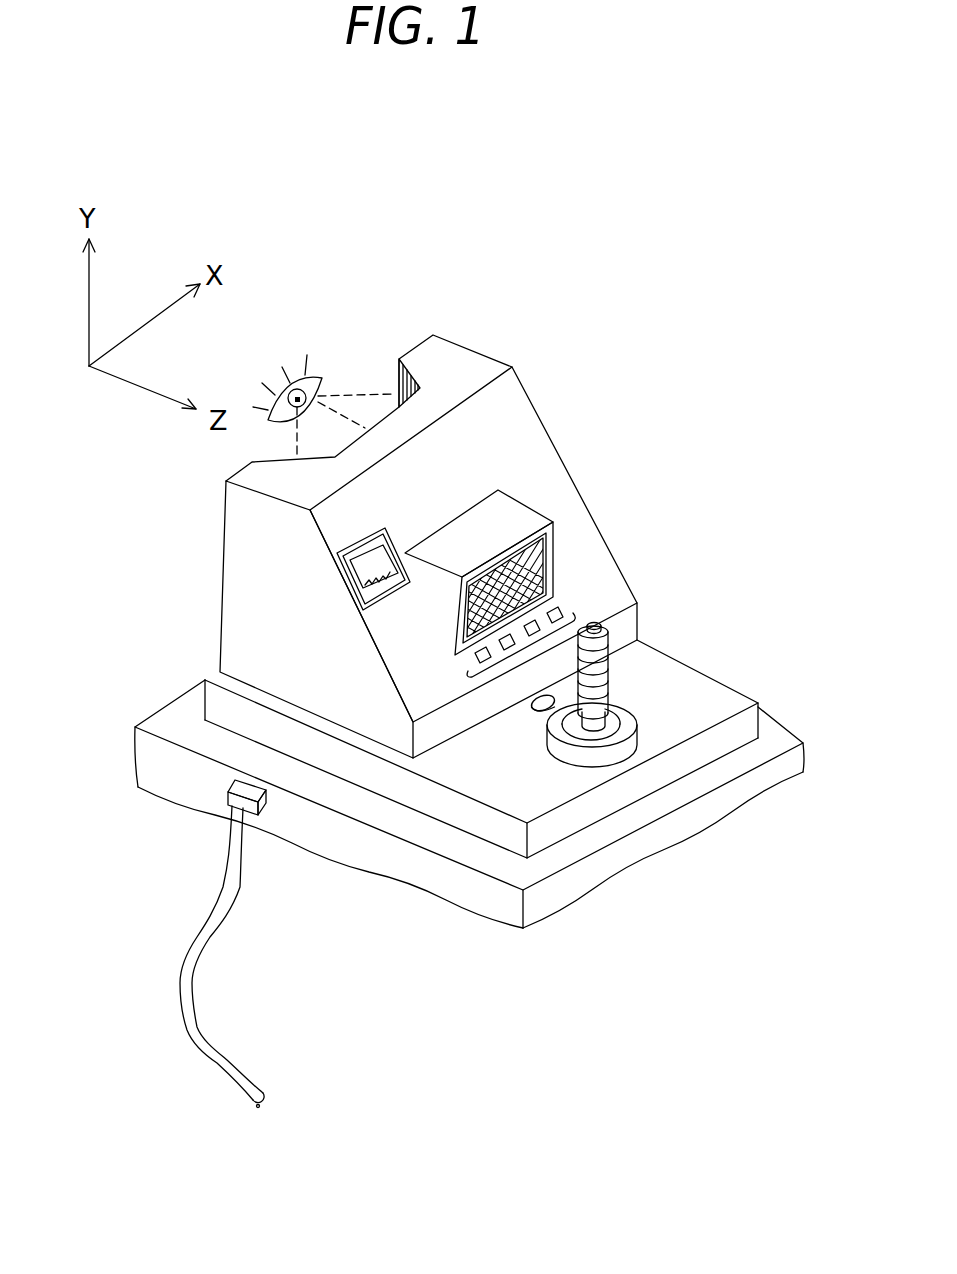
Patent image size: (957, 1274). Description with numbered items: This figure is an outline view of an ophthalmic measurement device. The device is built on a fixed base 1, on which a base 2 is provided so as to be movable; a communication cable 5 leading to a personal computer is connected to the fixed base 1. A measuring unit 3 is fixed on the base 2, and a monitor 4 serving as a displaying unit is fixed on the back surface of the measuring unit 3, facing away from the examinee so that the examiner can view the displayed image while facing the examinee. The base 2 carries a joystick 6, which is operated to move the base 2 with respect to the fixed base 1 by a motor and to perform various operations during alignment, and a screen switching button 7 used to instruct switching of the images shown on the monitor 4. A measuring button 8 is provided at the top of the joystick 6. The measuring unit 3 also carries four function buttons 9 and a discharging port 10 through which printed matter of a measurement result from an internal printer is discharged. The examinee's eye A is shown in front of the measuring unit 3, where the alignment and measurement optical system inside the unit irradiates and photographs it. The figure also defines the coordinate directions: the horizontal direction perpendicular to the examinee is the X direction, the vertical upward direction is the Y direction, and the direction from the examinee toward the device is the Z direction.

The fixed base 1 is at (708, 832).
The base 2 is at (708, 676).
The measuring unit 3 is at (553, 442).
The monitor 4 is at (543, 542).
The communication cable 5 is at (208, 948).
The joystick 6 is at (608, 658).
The screen switching button 7 is at (541, 711).
The measuring button 8 is at (595, 622).
The function buttons 9 is at (522, 652).
The discharging port 10 is at (343, 580).
The examinee's eye A is at (313, 377).